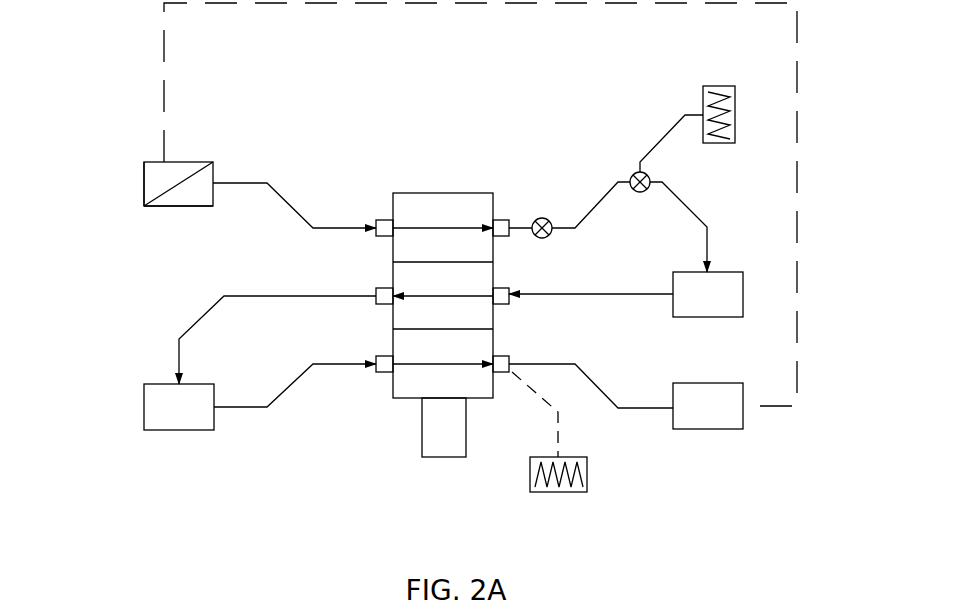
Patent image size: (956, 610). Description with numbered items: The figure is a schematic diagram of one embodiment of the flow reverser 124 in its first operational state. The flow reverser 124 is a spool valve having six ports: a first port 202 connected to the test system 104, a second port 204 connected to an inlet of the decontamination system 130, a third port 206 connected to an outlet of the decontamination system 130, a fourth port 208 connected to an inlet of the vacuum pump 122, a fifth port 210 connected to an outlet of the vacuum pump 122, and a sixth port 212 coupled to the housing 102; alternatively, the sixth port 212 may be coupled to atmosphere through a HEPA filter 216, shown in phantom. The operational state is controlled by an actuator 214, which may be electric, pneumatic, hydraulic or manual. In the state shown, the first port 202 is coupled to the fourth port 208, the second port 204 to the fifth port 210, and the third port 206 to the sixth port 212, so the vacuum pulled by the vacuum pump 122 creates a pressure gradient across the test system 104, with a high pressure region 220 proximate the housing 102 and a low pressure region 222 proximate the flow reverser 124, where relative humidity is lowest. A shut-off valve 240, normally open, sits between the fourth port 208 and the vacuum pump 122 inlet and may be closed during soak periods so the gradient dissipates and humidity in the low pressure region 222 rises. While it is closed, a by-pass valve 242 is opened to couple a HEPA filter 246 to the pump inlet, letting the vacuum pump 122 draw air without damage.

The housing 102 is at (708, 406).
The test system 104 is at (190, 162).
The vacuum pump 122 is at (708, 294).
The flow reverser 124 is at (447, 104).
The decontamination system 130 is at (179, 407).
The first port 202 is at (385, 218).
The second port 204 is at (388, 288).
The third port 206 is at (382, 372).
The fourth port 208 is at (505, 218).
The fifth port 210 is at (512, 287).
The sixth port 212 is at (512, 356).
The actuator 214 is at (448, 457).
The HEPA filter 216 is at (587, 468).
The high pressure region 220 is at (150, 181).
The low pressure region 222 is at (186, 200).
The shut-off valve 240 is at (538, 217).
The by-pass valve 242 is at (640, 192).
The HEPA filter 246 is at (720, 86).